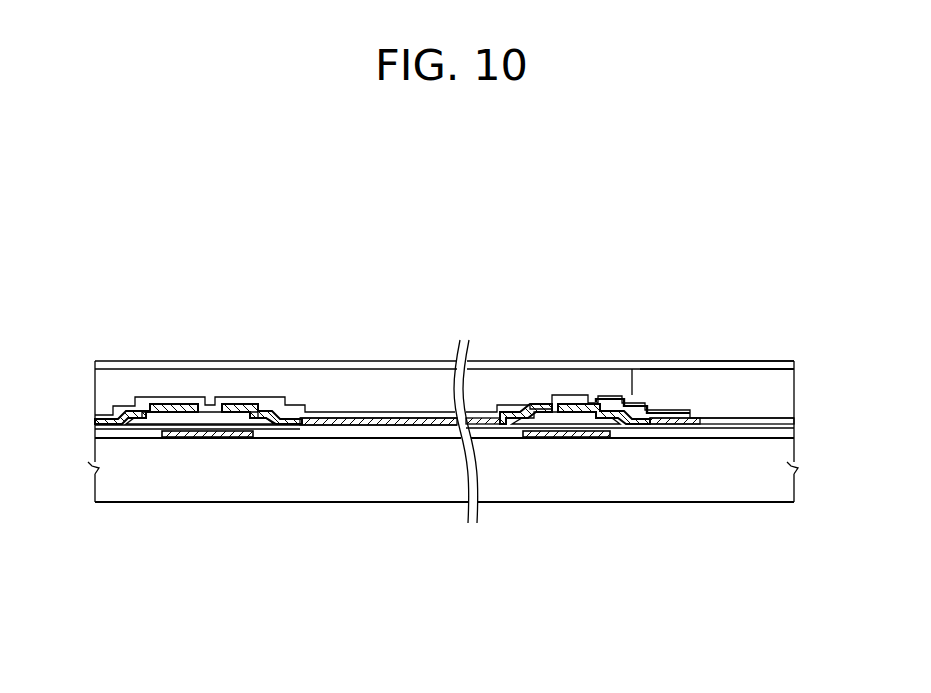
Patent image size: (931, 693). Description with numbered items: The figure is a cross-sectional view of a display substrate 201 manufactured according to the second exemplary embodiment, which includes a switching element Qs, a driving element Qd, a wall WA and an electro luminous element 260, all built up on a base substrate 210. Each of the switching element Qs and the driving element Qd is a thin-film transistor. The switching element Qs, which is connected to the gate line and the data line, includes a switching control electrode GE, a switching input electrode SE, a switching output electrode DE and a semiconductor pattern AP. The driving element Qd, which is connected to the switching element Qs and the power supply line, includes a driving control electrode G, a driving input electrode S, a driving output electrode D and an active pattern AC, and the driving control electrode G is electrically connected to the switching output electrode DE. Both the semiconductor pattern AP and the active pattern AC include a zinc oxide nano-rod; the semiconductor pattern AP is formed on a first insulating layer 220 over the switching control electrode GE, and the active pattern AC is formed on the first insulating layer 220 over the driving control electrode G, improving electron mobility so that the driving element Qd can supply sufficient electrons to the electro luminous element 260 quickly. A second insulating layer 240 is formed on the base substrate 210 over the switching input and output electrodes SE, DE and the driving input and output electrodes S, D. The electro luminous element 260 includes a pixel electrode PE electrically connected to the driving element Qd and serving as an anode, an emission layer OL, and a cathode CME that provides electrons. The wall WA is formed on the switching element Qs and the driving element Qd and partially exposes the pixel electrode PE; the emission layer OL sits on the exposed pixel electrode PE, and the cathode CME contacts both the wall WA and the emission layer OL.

The display substrate 201 is at (441, 216).
The base substrate 210 is at (796, 476).
The first insulating layer 220 is at (329, 434).
The second insulating layer 240 is at (368, 417).
The electro luminous element 260 is at (787, 312).
The wall WA is at (412, 376).
The pixel electrode PE is at (610, 392).
The emission layer OL is at (683, 384).
The cathode CME is at (766, 366).
The switching input electrode SE is at (157, 413).
The switching control electrode GE is at (208, 438).
The switching output electrode DE is at (247, 438).
The semiconductor pattern AP is at (273, 425).
The switching element Qs is at (352, 595).
The driving control electrode G is at (530, 438).
The driving input electrode S is at (572, 438).
The driving output electrode D is at (632, 438).
The active pattern AC is at (636, 430).
The driving element Qd is at (745, 595).